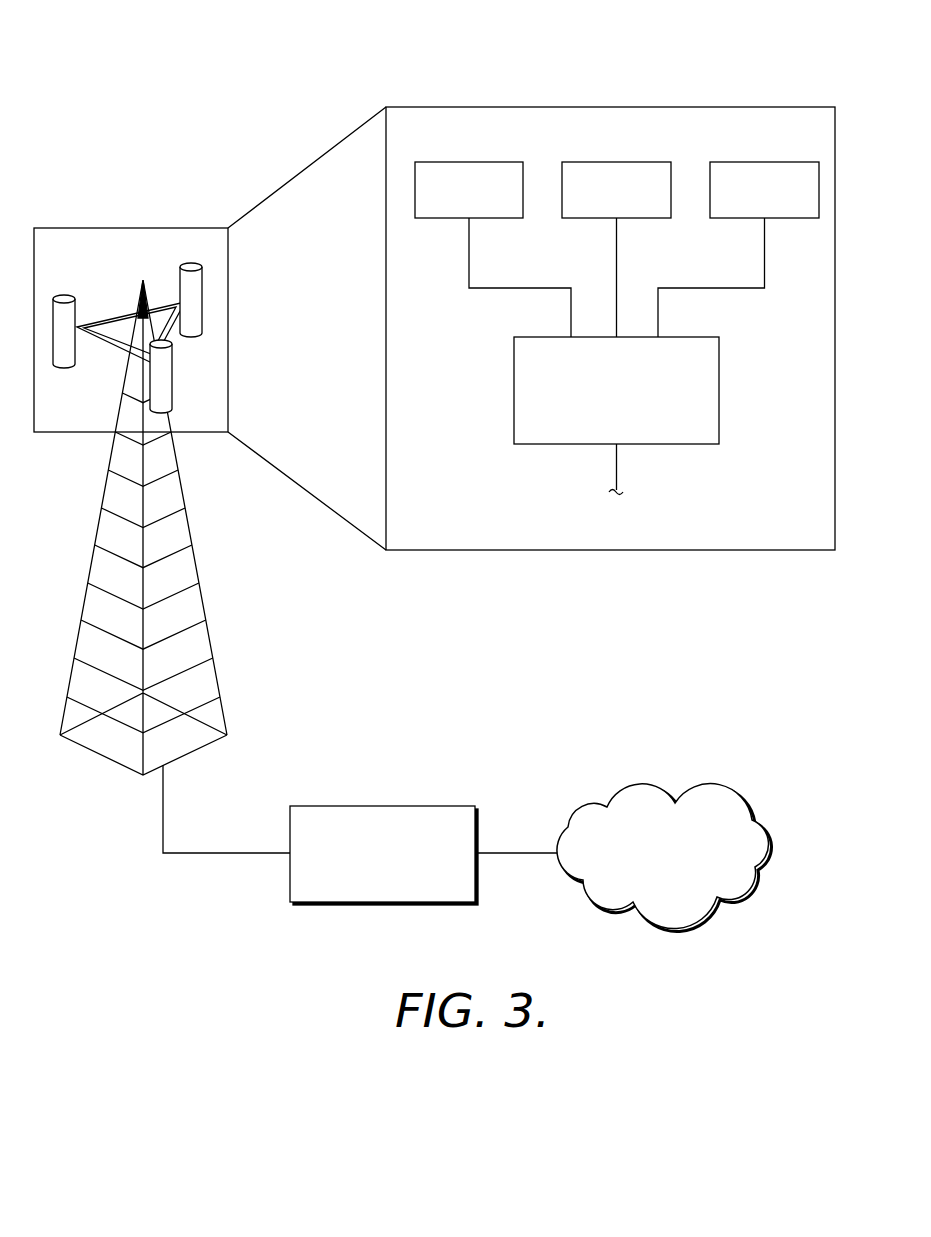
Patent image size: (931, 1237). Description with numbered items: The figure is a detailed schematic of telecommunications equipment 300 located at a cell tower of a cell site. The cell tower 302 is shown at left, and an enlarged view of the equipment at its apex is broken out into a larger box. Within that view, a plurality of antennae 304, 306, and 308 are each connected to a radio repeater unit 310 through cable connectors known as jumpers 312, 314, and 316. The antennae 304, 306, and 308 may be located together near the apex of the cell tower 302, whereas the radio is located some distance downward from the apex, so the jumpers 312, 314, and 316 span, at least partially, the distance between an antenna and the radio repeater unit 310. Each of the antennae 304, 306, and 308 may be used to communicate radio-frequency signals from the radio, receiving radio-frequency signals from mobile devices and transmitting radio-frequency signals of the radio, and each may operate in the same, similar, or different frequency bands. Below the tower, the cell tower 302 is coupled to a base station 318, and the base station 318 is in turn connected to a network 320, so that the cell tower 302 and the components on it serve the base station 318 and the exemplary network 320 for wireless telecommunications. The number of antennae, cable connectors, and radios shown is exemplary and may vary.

The telecommunications equipment 300 is at (201, 62).
The cell tower 302 is at (92, 555).
The antenna 304 is at (482, 162).
The antenna 306 is at (637, 162).
The antenna 308 is at (766, 162).
The radio repeater unit 310 is at (699, 338).
The jumper 312 is at (516, 288).
The jumper 314 is at (618, 241).
The jumper 316 is at (693, 288).
The base station 318 is at (412, 806).
The network 320 is at (709, 794).